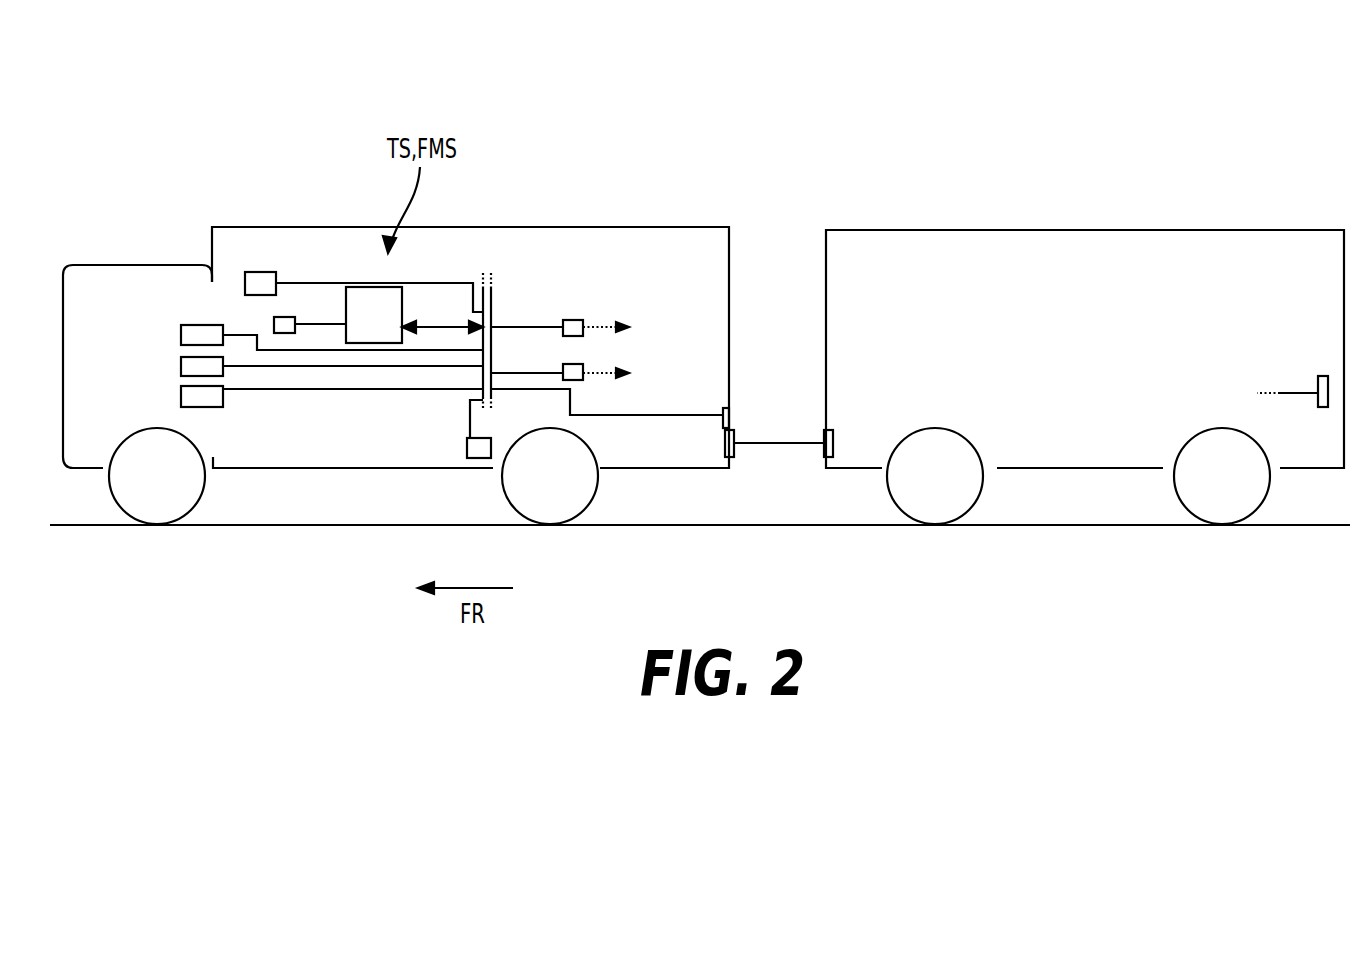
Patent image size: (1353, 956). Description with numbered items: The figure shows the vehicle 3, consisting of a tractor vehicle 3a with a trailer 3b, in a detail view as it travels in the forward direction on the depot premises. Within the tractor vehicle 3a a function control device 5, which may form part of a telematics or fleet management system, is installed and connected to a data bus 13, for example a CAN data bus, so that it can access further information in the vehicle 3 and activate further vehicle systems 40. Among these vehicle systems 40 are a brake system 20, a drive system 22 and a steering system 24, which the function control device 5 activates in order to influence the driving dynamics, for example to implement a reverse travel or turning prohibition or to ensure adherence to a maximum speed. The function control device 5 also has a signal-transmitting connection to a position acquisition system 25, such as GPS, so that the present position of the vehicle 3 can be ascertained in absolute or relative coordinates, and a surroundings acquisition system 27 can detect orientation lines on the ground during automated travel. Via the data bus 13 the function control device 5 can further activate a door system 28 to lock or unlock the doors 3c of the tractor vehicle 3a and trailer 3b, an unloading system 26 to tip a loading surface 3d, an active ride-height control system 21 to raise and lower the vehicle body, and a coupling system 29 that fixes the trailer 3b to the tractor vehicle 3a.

The vehicle 3 is at (565, 118).
The tractor vehicle 3a is at (653, 227).
The trailer 3b is at (1183, 230).
The door 3c is at (644, 327).
The loading surface 3d is at (644, 370).
The function control device 5 is at (414, 315).
The data bus 13 is at (492, 298).
The brake system 20 is at (181, 335).
The active ride-height control system 21 is at (467, 448).
The drive system 22 is at (181, 366).
The steering system 24 is at (181, 395).
The position acquisition system 25 is at (285, 317).
The unloading system 26 is at (570, 365).
The surroundings acquisition system 27 is at (260, 272).
The door system 28 is at (573, 320).
The coupling system 29 is at (723, 423).
The vehicle systems 40 is at (186, 285).